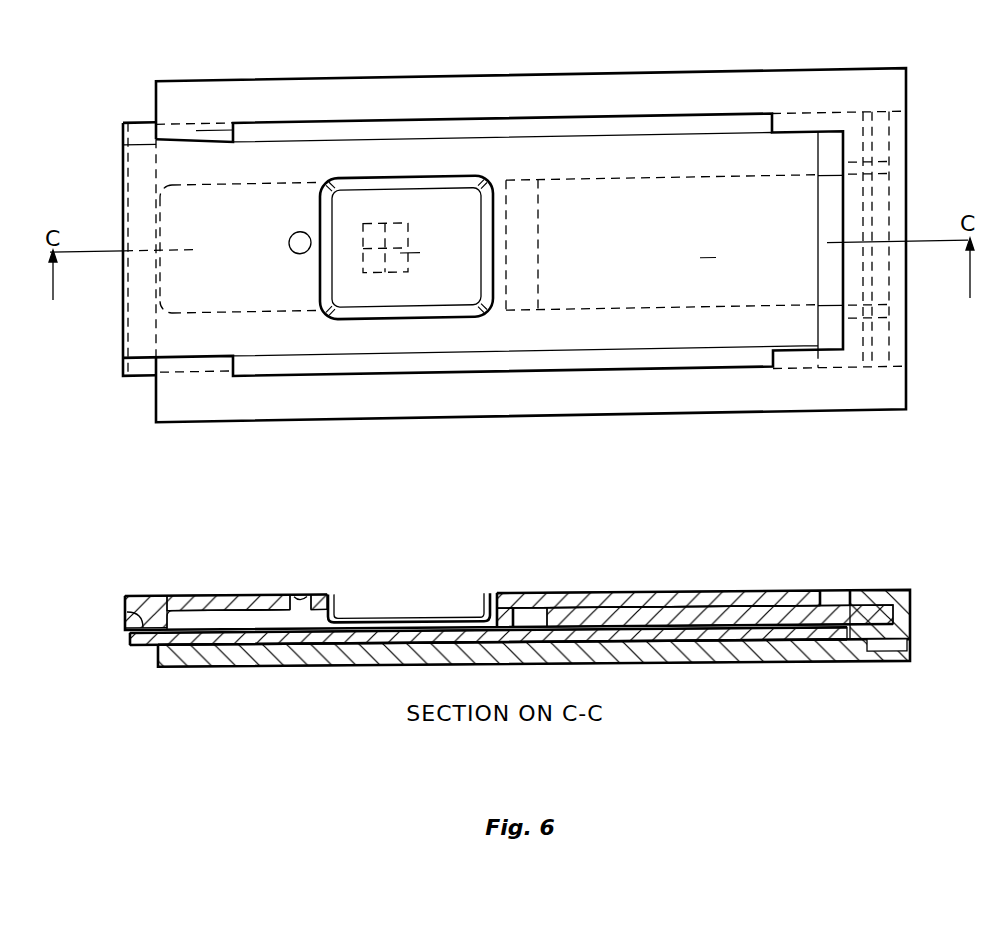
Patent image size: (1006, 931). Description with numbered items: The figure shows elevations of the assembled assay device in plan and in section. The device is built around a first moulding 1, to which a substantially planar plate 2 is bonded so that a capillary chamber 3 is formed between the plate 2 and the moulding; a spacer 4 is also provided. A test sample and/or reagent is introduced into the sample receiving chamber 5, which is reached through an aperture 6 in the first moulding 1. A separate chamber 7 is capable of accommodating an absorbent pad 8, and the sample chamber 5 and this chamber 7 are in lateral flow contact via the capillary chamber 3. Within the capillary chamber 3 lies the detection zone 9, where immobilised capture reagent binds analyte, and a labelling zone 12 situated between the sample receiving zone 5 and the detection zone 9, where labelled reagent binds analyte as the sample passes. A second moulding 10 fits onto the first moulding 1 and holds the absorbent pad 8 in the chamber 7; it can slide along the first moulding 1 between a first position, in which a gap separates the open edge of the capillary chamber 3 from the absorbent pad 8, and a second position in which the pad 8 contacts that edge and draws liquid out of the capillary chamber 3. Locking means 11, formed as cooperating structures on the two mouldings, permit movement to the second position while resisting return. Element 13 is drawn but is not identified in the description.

The first moulding 1 is at (305, 343).
The substantially planar plate 2 is at (145, 637).
The capillary chamber 3 is at (438, 265).
The spacer 4 is at (138, 620).
The sample receiving chamber 5 is at (180, 215).
The aperture 6 is at (300, 236).
The chamber capable of accommodating an absorbent pad 7 is at (630, 303).
The absorbent pad 8 is at (708, 270).
The detection zone 9 is at (376, 222).
The second moulding 10 is at (190, 405).
The locking means 11 is at (197, 128).
The labelling zone 12 is at (355, 297).
The hidden chamber 13 is at (520, 295).